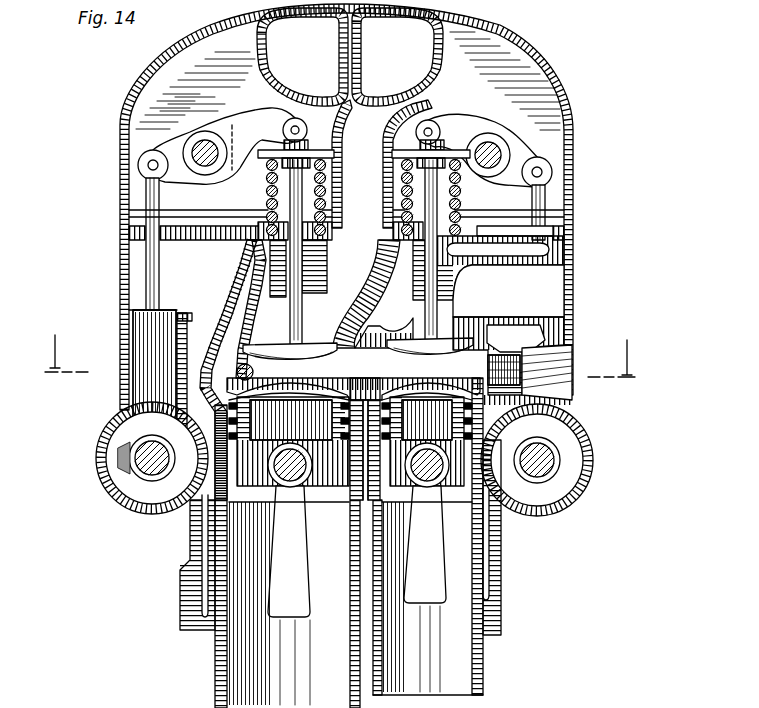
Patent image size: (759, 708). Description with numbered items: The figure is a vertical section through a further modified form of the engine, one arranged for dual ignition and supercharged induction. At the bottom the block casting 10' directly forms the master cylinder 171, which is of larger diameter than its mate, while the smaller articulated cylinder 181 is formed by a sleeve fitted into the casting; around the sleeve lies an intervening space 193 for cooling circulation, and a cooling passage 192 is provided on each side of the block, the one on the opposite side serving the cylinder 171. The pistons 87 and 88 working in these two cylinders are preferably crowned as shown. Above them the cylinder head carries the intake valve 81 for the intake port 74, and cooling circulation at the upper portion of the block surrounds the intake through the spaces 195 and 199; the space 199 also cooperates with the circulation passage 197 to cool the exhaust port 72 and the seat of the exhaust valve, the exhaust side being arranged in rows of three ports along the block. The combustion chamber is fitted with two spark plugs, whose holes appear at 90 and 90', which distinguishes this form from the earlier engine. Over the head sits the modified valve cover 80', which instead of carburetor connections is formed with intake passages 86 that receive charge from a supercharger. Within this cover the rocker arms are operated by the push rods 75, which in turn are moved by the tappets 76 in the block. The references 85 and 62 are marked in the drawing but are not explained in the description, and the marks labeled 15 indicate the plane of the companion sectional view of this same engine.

The valve cover 80' is at (349, 207).
The intake passages 86 is at (350, 57).
The passage 85 is at (382, 164).
The rocker shaft 62 is at (208, 142).
The push rods 75 is at (548, 205).
The tappets 76 is at (150, 256).
The exhaust port 72 is at (555, 283).
The circulation passage 197 is at (548, 250).
The cooling space 195 is at (246, 282).
The intake port 74 is at (347, 294).
The intake valve 81 is at (302, 312).
The cooling space 199 is at (366, 330).
The spark plug hole 90 is at (219, 339).
The spark plug hole 90' is at (508, 358).
The block casting 10' is at (344, 555).
The cooling passage 192 is at (205, 583).
The cooling space 193 is at (367, 578).
The piston 87 is at (346, 505).
The piston 88 is at (470, 510).
The master cylinder 171 is at (226, 636).
The articulated cylinder 181 is at (478, 630).
The section line 15- 15 is at (339, 356).